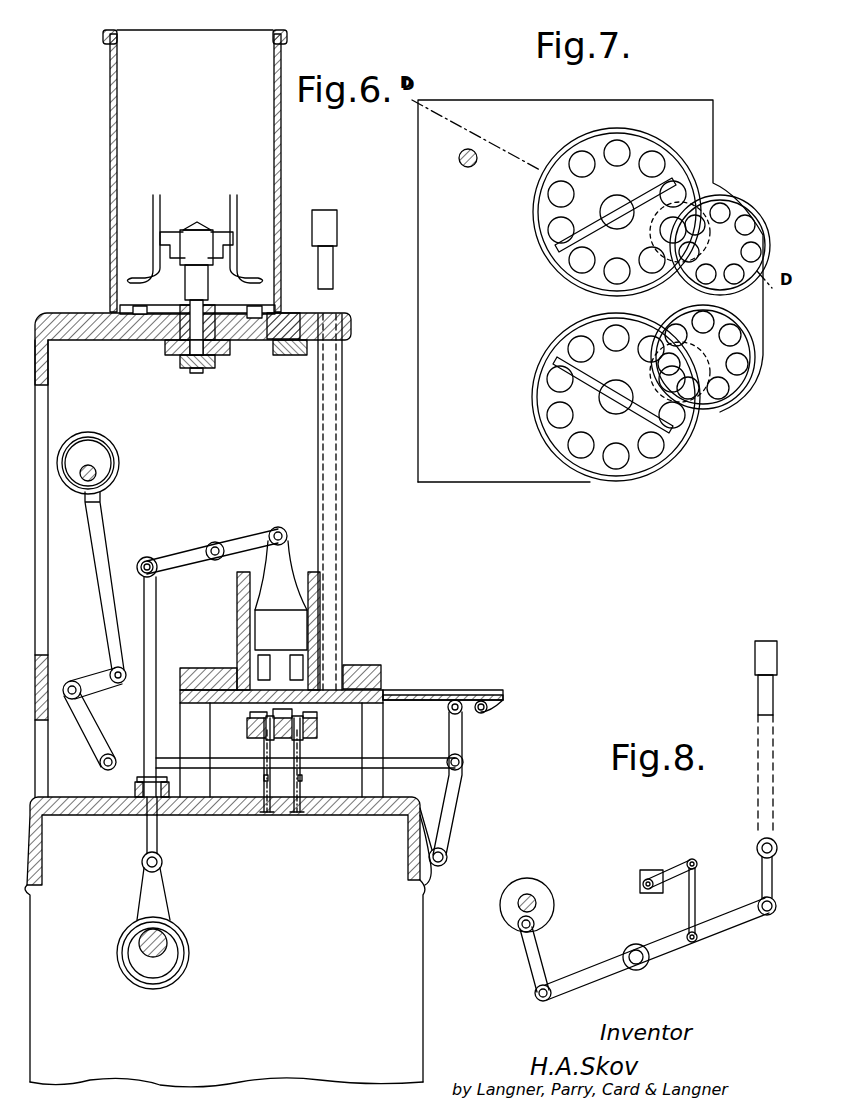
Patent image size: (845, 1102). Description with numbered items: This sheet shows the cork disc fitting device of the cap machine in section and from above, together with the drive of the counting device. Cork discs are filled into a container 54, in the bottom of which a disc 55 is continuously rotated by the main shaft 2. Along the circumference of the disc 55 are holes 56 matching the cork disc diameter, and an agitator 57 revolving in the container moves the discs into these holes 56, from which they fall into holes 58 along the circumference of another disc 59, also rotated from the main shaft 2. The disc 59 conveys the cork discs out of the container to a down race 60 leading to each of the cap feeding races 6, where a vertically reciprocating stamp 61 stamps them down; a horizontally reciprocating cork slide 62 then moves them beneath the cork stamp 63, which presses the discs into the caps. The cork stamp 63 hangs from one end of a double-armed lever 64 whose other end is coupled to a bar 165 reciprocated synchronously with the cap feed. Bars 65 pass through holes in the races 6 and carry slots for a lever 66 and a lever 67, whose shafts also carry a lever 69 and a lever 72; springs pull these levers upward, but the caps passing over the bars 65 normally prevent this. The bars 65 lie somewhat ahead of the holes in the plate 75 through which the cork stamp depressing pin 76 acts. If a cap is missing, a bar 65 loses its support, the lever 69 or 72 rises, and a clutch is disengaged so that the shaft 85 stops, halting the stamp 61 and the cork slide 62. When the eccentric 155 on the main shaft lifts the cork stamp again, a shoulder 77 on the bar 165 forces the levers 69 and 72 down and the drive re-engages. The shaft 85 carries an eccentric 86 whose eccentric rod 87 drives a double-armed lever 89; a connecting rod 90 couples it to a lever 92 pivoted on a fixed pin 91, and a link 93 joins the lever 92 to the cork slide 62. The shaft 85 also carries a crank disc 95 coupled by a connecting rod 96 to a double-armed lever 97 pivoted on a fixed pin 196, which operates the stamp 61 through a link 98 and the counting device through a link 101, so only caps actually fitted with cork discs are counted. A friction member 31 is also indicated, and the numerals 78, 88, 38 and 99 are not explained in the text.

In FIG. 6, the container 54 is at (281, 168).
In FIG. 7, the container 54 is at (665, 182).
In FIG. 6, the disc 55 is at (166, 306).
In FIG. 7, the disc 55 is at (636, 150).
In FIG. 6, the holes 56 is at (136, 306).
In FIG. 7, the holes 56 is at (658, 163).
In FIG. 6, the agitator 57 is at (205, 222).
In FIG. 7, the agitator 57 is at (690, 180).
In FIG. 6, the holes 58 is at (250, 308).
In FIG. 7, the holes 58 is at (740, 232).
In FIG. 6, the disc 59 is at (312, 313).
In FIG. 7, the disc 59 is at (725, 213).
In FIG. 6, the down race 60 is at (335, 481).
In FIG. 6, the stamp 61 is at (337, 222).
In FIG. 8, the stamp 61 is at (758, 660).
In FIG. 6, the cork slide 62 is at (445, 690).
In FIG. 6, the cork stamp 63 is at (281, 610).
In FIG. 6, the double-armed lever 64 is at (192, 553).
In FIG. 6, the bars 65 is at (262, 752).
In FIG. 6, the lever 66 is at (262, 795).
In FIG. 6, the lever 67 is at (305, 776).
In FIG. 6, the lever 69 is at (172, 808).
In FIG. 6, the lever 72 is at (135, 788).
In FIG. 6, the plate 75 is at (208, 680).
In FIG. 6, the cork stamp depressing pin 76 is at (244, 660).
In FIG. 6, the shoulder 77 is at (142, 772).
In FIG. 6, the connecting rod 78 is at (145, 857).
In FIG. 6, the shaft 85 is at (98, 473).
In FIG. 8, the shaft 85 is at (532, 895).
In FIG. 6, the eccentric 86 is at (93, 438).
In FIG. 6, the eccentric rod 87 is at (100, 553).
In FIG. 6, the link 88 is at (96, 710).
In FIG. 6, the double-armed lever 89 is at (72, 681).
In FIG. 6, the connecting rod 90 is at (430, 760).
In FIG. 6, the fixed pin 91 is at (440, 866).
In FIG. 6, the lever 92 is at (460, 782).
In FIG. 6, the link 93 is at (473, 712).
In FIG. 6, the bar 165 is at (157, 610).
In FIG. 6, the eccentric 155 is at (168, 964).
In FIG. 6, the main shaft 2 is at (165, 936).
In FIG. 6, the cap feeding races 6 is at (250, 735).
In FIG. 6, the valve 38 is at (252, 715).
In FIG. 7, the friction member 31 is at (474, 165).
In FIG. 8, the crank disc 95 is at (554, 910).
In FIG. 8, the connecting rod 96 is at (532, 960).
In FIG. 8, the double-armed lever 97 is at (610, 978).
In FIG. 8, the link 98 is at (765, 866).
In FIG. 8, the bracket 99 is at (653, 870).
In FIG. 8, the link 101 is at (697, 884).
In FIG. 8, the fixed pin 196 is at (640, 950).